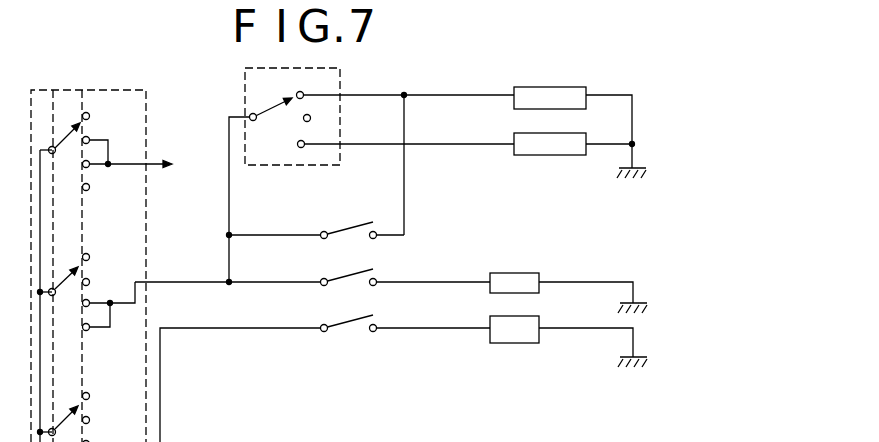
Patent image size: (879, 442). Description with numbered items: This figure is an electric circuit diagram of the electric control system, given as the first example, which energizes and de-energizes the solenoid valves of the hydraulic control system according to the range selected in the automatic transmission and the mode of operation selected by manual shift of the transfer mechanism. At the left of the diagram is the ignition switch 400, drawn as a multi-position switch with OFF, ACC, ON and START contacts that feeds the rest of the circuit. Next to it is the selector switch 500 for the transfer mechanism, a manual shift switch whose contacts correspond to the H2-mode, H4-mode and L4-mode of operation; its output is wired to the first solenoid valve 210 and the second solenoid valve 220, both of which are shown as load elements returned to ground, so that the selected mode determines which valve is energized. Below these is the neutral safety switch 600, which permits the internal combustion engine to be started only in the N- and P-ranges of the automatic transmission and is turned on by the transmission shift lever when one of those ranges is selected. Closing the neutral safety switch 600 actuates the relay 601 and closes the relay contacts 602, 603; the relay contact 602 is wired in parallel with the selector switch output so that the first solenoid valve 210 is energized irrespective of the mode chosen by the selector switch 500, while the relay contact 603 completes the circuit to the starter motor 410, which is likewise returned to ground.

The ignition switch 400 is at (116, 241).
The selector switch 500 is at (327, 109).
The first solenoid valve 210 is at (571, 78).
The second solenoid valve 220 is at (553, 167).
The relay contact 602 is at (328, 212).
The neutral safety switch 600 is at (328, 263).
The relay contact 603 is at (331, 312).
The relay 601 is at (540, 258).
The starter motor 410 is at (541, 315).